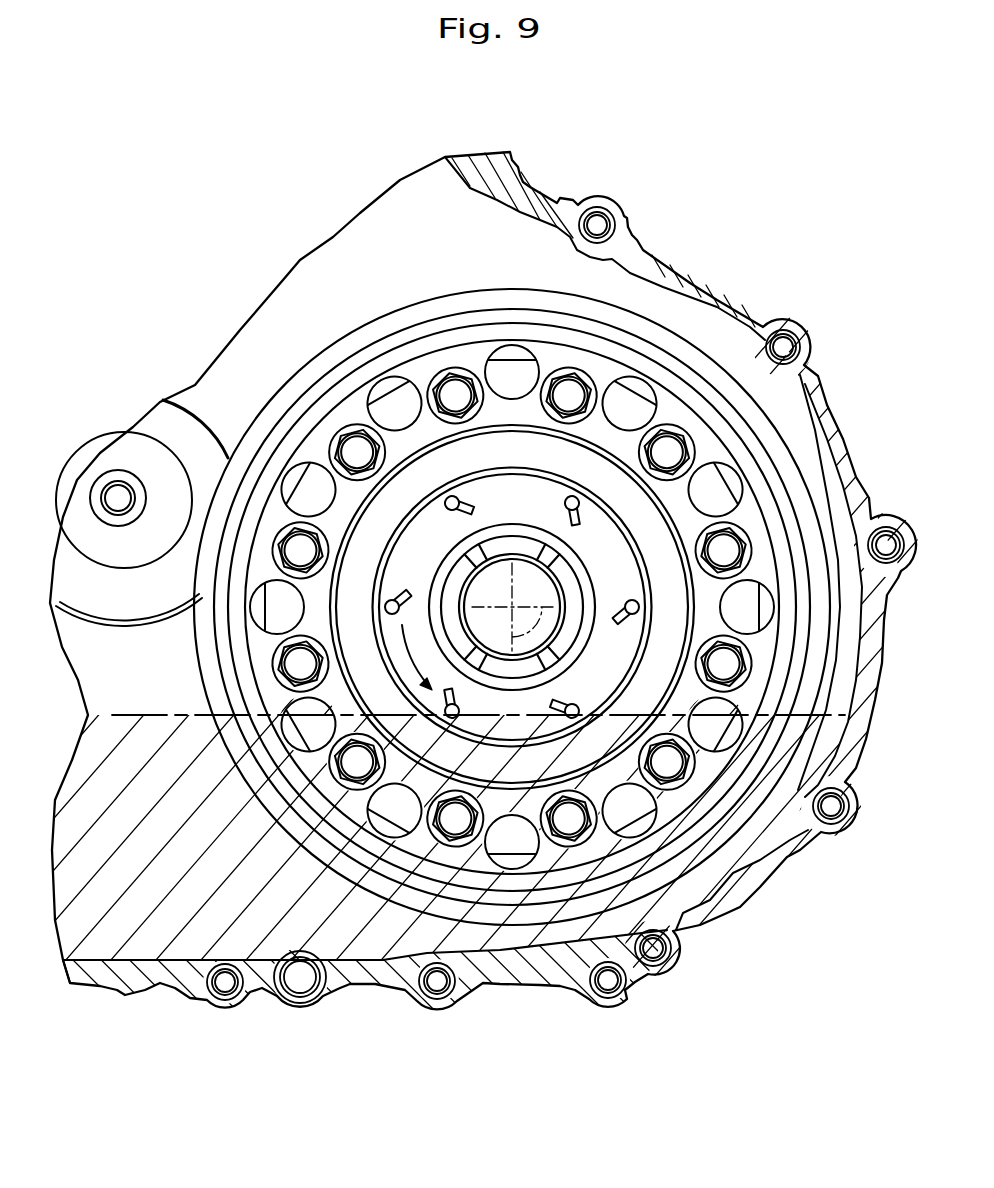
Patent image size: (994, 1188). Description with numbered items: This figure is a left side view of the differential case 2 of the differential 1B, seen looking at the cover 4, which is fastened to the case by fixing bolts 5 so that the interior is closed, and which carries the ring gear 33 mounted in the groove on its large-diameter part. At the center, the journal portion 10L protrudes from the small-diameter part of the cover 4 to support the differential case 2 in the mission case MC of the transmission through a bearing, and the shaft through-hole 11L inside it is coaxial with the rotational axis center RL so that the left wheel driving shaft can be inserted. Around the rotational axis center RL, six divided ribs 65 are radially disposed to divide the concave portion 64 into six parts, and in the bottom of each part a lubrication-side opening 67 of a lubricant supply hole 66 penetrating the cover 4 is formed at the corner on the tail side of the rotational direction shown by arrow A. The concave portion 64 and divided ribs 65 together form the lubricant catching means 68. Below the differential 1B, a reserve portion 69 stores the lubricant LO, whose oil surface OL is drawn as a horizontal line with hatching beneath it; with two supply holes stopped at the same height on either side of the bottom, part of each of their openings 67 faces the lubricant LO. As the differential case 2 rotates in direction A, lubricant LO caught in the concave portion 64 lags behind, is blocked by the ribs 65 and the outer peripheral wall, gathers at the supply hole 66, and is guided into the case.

The differential 1B is at (337, 190).
The differential case 2 is at (292, 370).
The cover 4 is at (790, 845).
The fixing bolt 5 is at (580, 392).
The ring gear 33 is at (687, 353).
The journal portion 10L is at (446, 559).
The shaft through-hole 11L is at (546, 571).
The rotational axis center RL is at (552, 658).
The arrow indicating rotational direction A is at (417, 657).
The oil surface OL is at (112, 715).
The lubricant LO is at (127, 852).
The mission case MC is at (150, 973).
The concave portion 64 is at (569, 689).
The divided rib 65 is at (540, 869).
The lubricant supply hole 66 is at (428, 708).
The lubrication-side opening 67 is at (420, 878).
The lubricant catching means 68 is at (655, 687).
The reserve portion 69 is at (370, 950).